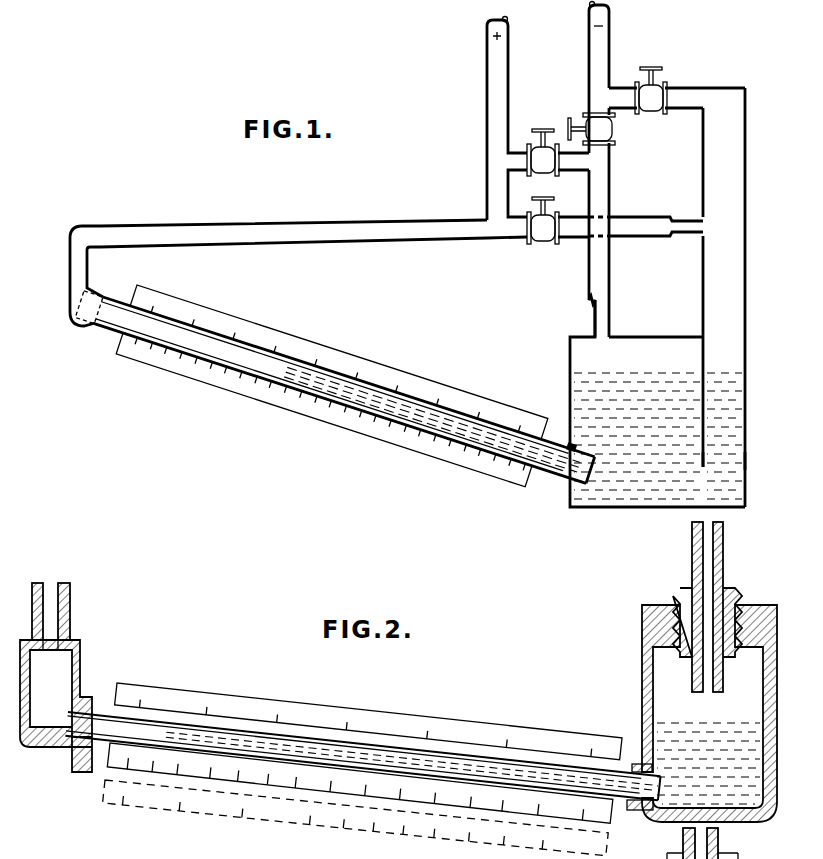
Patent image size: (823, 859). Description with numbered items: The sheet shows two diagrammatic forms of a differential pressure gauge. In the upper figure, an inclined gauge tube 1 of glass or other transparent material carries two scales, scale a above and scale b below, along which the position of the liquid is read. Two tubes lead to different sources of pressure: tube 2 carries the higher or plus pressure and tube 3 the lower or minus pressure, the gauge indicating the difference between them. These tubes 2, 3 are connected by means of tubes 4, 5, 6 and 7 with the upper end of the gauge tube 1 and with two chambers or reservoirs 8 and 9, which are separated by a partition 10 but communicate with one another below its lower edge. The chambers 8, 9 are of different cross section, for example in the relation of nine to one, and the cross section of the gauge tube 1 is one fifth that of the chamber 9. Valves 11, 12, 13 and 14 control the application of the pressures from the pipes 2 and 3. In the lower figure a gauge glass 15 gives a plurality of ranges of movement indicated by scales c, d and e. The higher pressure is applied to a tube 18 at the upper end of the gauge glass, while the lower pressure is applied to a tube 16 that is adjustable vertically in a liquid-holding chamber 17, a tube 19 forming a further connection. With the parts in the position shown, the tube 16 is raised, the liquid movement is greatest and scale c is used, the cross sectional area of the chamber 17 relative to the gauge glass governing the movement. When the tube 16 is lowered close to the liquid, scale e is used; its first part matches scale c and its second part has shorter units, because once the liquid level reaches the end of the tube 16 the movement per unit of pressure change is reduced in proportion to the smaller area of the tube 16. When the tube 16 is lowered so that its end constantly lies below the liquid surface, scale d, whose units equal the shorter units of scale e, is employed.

In FIG. 1, the inclined gauge tube 1 is at (263, 363).
In FIG. 1, the tube (plus pressure) 2 is at (487, 118).
In FIG. 1, the tube (minus pressure) 3 is at (588, 45).
In FIG. 1, the connecting tube 4 is at (378, 236).
In FIG. 1, the connecting tube 5 is at (644, 219).
In FIG. 1, the connecting tube 6 is at (603, 267).
In FIG. 1, the connecting tube 7 is at (677, 108).
In FIG. 1, the chamber 8 is at (670, 346).
In FIG. 1, the chamber 9 is at (706, 278).
In FIG. 1, the partition 10 is at (707, 440).
In FIG. 1, the valve 11 is at (537, 128).
In FIG. 1, the valve 12 is at (540, 245).
In FIG. 1, the valve 13 is at (608, 128).
In FIG. 1, the valve 14 is at (652, 97).
In FIG. 2, the gauge glass 15 is at (137, 725).
In FIG. 2, the tube 16 is at (705, 548).
In FIG. 2, the chamber 17 is at (750, 680).
In FIG. 2, the tube 18 is at (55, 602).
In FIG. 2, the tube 19 is at (720, 842).
In FIG. 1, the scale a is at (160, 292).
In FIG. 1, the scale b is at (198, 380).
In FIG. 2, the scale c is at (185, 695).
In FIG. 2, the scale d is at (110, 755).
In FIG. 2, the scale e is at (105, 788).